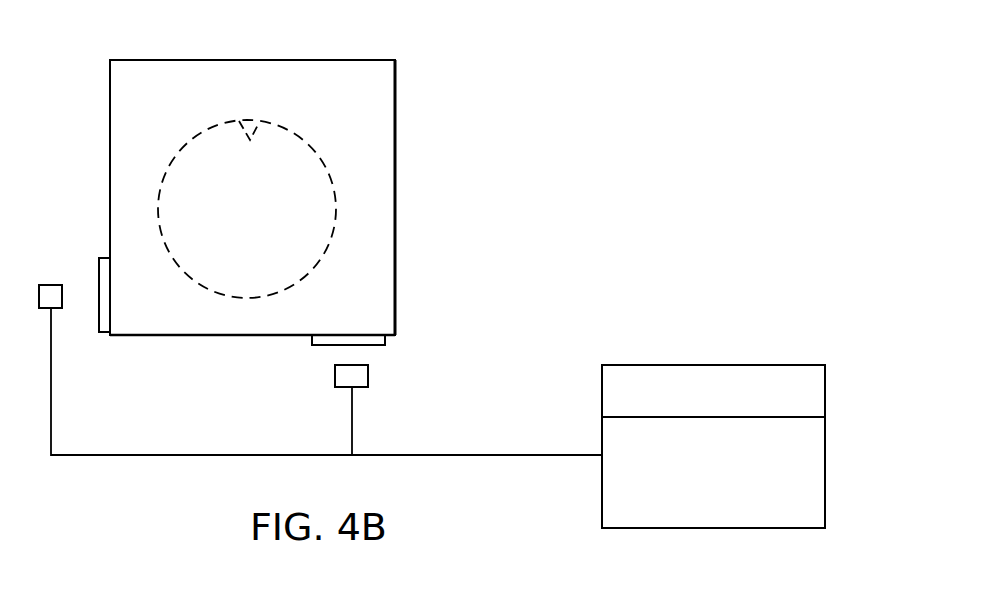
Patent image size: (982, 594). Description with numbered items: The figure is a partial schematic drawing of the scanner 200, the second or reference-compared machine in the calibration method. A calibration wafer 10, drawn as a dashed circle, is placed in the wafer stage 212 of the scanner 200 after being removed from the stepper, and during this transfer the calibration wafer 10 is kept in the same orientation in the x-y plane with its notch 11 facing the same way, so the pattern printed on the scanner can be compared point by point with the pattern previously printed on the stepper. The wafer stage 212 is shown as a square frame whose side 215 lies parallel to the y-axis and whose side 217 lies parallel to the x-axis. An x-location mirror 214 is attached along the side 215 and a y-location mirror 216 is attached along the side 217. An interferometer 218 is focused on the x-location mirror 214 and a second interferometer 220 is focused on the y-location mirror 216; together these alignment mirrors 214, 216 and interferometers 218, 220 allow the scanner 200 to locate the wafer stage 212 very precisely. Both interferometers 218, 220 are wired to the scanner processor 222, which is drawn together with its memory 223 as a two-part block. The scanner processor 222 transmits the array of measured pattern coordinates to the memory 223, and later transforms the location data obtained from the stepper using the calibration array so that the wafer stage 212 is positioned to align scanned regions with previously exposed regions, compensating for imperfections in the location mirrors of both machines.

The scanner 200 is at (424, 84).
The wafer stage 212 is at (395, 193).
The side 215 is at (110, 144).
The side 217 is at (242, 336).
The calibration wafer 10 is at (328, 165).
The notch 11 is at (243, 117).
The x-location mirror 214 is at (98, 323).
The y-location mirror 216 is at (322, 345).
The interferometer 218 is at (43, 285).
The interferometer 220 is at (369, 376).
The scanner processor 222 is at (602, 488).
The memory 223 is at (602, 388).